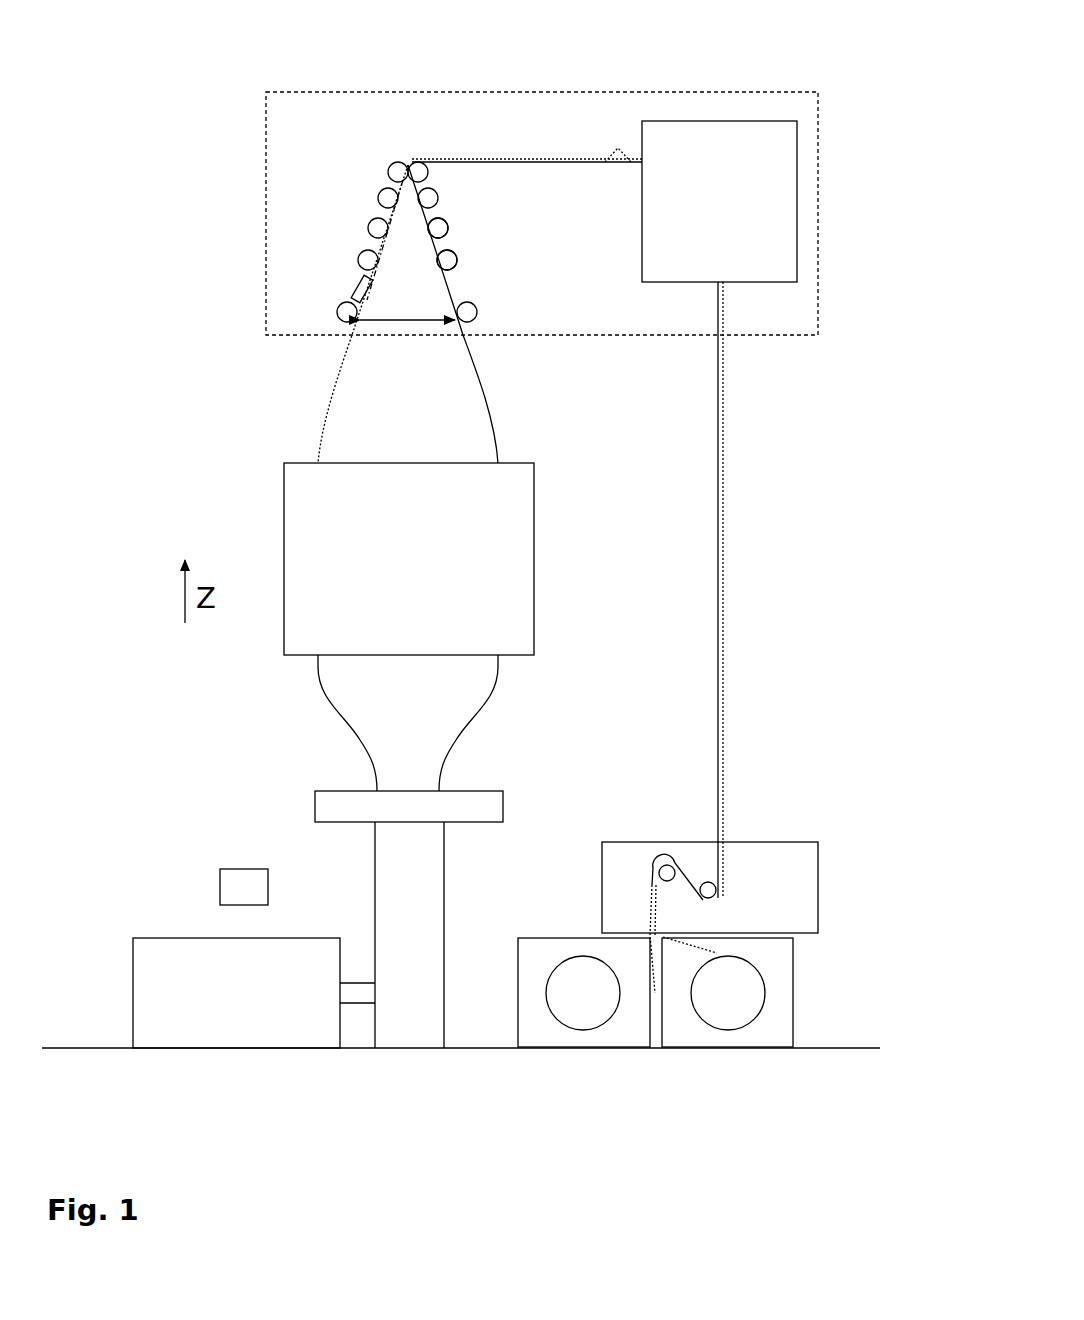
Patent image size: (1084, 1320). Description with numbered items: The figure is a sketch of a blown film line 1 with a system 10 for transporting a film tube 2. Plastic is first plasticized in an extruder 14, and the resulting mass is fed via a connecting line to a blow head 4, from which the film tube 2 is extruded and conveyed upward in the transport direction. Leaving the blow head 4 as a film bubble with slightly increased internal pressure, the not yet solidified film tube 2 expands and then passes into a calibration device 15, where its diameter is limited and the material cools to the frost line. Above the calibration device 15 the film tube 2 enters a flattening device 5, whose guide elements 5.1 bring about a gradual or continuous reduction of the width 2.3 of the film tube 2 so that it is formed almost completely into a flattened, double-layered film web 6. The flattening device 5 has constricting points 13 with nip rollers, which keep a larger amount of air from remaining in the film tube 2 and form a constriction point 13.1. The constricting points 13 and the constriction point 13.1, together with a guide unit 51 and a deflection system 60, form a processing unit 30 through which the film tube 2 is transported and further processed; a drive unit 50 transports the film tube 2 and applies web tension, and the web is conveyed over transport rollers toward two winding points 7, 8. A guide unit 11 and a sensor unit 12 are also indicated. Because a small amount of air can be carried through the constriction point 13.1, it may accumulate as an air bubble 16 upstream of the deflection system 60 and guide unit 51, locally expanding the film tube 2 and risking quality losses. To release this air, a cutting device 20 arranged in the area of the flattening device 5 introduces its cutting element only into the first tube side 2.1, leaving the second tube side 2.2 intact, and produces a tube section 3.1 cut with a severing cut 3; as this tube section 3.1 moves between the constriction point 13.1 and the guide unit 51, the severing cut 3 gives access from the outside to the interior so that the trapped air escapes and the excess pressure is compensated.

The blown film line 1 is at (300, 710).
The film tube 2 is at (500, 683).
The first tube side 2.1 is at (325, 415).
The second tube side 2.2 is at (490, 413).
The width of film tube 2.3 is at (383, 322).
The severing cut 3 is at (373, 243).
The tube section 3.1 is at (393, 278).
The blow head 4 is at (455, 802).
The flattening device 5 is at (458, 200).
The guide elements 5.1 is at (437, 230).
The film web 6 is at (648, 935).
The winding point 7 is at (590, 1003).
The winding point 8 is at (743, 993).
The system 10 is at (145, 495).
The guide unit 11 is at (220, 895).
The sensor unit 12 is at (727, 762).
The constricting points 13 is at (418, 167).
The constriction point 13.1 is at (402, 147).
The extruder 14 is at (254, 993).
The calibration device 15 is at (540, 550).
The air bubble 16 is at (615, 143).
The cutting device 20 is at (356, 282).
The processing unit 30 is at (689, 92).
The drive unit 50 is at (675, 870).
The guide unit 51 is at (710, 900).
The deflection system 60 is at (775, 172).